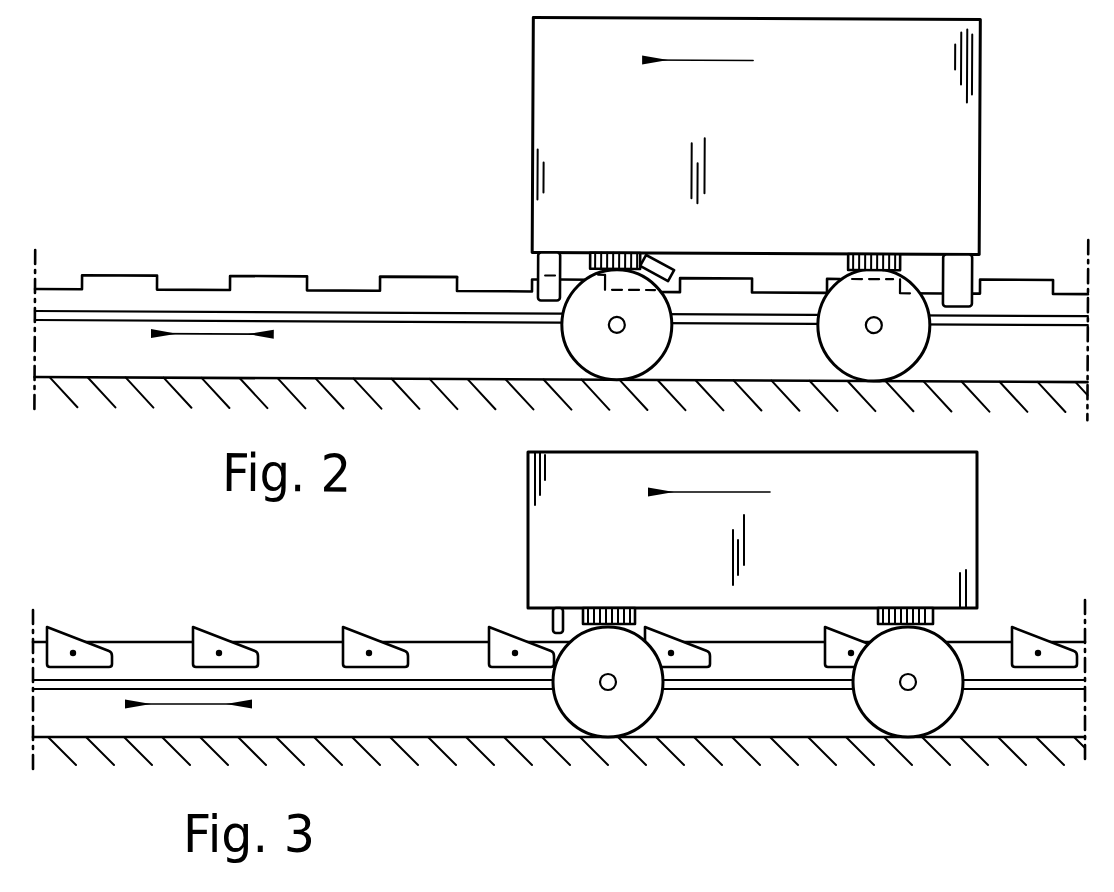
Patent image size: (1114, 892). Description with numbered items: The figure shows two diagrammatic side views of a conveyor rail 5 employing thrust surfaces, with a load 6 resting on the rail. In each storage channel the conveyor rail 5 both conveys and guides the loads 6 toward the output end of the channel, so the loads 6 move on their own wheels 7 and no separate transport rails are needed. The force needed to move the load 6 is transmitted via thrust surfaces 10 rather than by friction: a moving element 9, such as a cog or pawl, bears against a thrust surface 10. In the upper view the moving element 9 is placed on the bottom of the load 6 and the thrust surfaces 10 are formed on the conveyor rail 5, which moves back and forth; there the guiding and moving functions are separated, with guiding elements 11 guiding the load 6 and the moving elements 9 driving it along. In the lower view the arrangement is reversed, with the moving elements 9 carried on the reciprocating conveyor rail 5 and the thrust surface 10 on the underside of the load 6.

In FIG. 2, the conveyor rail 5 is at (182, 296).
In FIG. 3, the conveyor rail 5 is at (136, 656).
In FIG. 2, the load 6 is at (540, 53).
In FIG. 3, the load 6 is at (532, 478).
In FIG. 2, the wheels 7 is at (575, 335).
In FIG. 3, the wheels 7 is at (637, 707).
In FIG. 2, the moving element 9 is at (658, 266).
In FIG. 3, the moving element 9 is at (362, 640).
In FIG. 2, the thrust surface 10 is at (407, 283).
In FIG. 3, the thrust surface 10 is at (553, 622).
In FIG. 2, the guiding element 11 is at (548, 260).